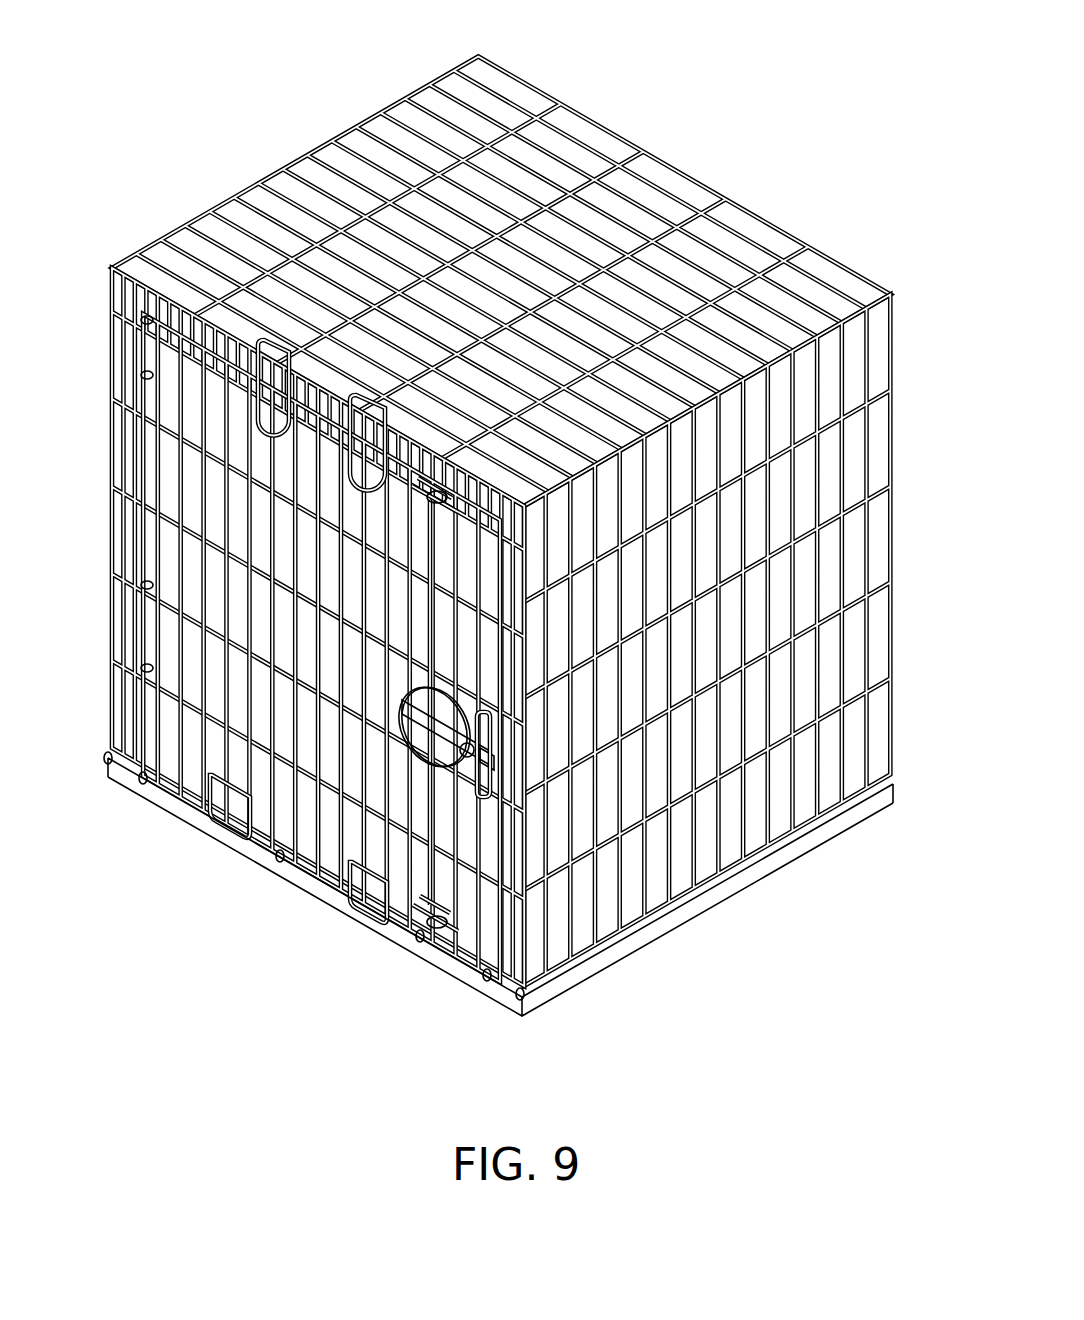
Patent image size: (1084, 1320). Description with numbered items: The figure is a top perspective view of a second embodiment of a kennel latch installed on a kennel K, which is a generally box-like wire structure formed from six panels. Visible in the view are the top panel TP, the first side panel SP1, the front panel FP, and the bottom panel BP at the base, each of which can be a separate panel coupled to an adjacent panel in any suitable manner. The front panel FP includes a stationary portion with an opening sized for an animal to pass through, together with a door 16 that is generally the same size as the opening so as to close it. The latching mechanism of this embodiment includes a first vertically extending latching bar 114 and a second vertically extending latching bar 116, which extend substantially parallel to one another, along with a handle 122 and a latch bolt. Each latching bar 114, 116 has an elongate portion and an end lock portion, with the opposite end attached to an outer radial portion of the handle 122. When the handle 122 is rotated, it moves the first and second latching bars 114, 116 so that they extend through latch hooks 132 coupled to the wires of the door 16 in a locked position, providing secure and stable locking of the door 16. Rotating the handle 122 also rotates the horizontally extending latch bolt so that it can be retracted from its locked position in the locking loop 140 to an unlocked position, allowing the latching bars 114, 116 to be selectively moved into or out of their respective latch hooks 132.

The kennel K is at (708, 152).
The top panel TP is at (320, 150).
The first side panel SP1 is at (880, 615).
The front panel FP is at (102, 694).
The bottom panel BP is at (498, 1003).
The door 16 is at (142, 364).
The first vertically extending latching bar 114 is at (430, 603).
The second vertically extending latching bar 116 is at (452, 830).
The handle 122 is at (403, 753).
The latch hooks 132 is at (447, 507).
The locking loop 140 is at (522, 797).